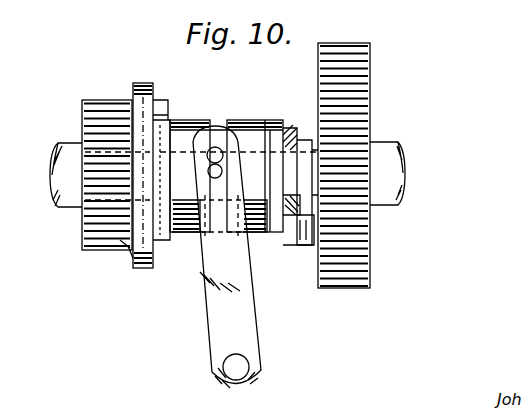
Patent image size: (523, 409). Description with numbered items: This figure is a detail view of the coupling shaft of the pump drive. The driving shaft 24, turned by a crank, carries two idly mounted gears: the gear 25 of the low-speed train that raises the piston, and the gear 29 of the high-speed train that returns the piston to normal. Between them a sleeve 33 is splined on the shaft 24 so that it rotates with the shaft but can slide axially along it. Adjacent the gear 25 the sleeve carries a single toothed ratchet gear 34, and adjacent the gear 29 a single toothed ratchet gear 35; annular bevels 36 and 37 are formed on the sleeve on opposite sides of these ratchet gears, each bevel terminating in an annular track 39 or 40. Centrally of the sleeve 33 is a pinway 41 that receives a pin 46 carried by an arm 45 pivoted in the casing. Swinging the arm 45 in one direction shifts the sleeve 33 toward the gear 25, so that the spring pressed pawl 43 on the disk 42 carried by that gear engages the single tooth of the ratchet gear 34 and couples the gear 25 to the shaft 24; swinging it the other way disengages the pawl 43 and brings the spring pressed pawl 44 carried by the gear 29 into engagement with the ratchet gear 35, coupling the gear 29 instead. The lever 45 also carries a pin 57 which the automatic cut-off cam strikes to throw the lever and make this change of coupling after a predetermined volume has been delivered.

The driving shaft 24 is at (63, 190).
The gear 25 is at (90, 120).
The gear 29 is at (372, 78).
The sleeve 33 is at (183, 125).
The single toothed ratchet gear 34 is at (165, 228).
The single toothed ratchet gear 35 is at (272, 128).
The annular bevel 36 is at (130, 258).
The annular bevel 37 is at (293, 128).
The annular track 39 is at (112, 250).
The annular track 40 is at (288, 216).
The pinway 41 is at (222, 128).
The disk 42 is at (146, 83).
The spring pressed pawl 43 is at (165, 108).
The spring pressed pawl 44 is at (306, 242).
The arm 45 is at (222, 296).
The pin 46 is at (190, 234).
The pin 57 is at (209, 148).